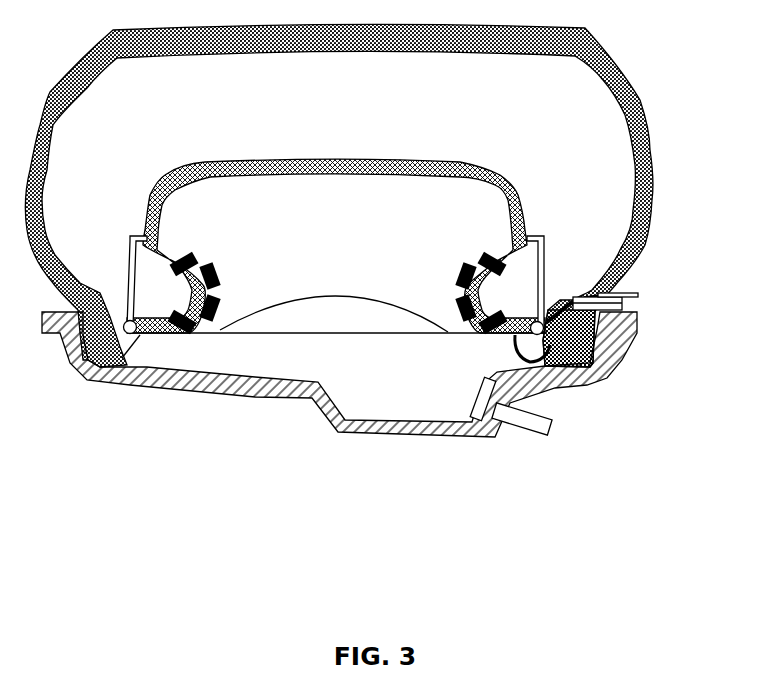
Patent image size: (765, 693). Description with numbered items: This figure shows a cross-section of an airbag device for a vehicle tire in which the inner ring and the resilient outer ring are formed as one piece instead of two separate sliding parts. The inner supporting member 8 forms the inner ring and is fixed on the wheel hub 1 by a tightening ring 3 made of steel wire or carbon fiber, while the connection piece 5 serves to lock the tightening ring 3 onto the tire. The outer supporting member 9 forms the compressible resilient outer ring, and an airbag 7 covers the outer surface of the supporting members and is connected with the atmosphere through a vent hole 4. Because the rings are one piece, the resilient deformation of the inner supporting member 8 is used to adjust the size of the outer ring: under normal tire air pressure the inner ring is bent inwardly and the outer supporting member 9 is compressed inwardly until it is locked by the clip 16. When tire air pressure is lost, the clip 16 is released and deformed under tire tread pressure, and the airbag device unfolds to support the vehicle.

The wheel hub 1 is at (495, 438).
The tightening ring 3 is at (583, 337).
The vent hole 4 is at (620, 300).
The connection piece 5 is at (622, 296).
The airbag 7 is at (480, 300).
The inner supporting member 8 is at (468, 280).
The outer supporting member 9 is at (497, 182).
The clip 16 is at (590, 288).